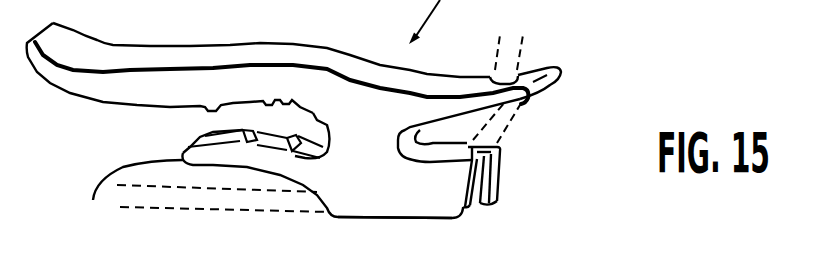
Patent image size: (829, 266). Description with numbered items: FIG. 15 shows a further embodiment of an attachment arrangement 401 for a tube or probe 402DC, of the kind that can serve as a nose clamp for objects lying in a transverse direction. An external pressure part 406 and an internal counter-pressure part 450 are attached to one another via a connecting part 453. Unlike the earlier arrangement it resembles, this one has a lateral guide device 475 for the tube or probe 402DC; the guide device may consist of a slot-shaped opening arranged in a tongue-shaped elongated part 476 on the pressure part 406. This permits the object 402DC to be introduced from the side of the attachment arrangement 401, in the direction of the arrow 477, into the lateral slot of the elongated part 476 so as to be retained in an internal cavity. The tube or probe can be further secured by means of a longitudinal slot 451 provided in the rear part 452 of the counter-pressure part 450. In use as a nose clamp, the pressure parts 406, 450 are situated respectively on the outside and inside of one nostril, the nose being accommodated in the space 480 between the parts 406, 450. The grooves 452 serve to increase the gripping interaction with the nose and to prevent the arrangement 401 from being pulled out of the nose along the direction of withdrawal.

The external pressure part 406 is at (113, 80).
The rear part / grooves 452 is at (250, 128).
The space 480 is at (180, 120).
The internal counter-pressure part 450 is at (126, 203).
The tube or probe 402DC is at (243, 197).
The connecting part 453 is at (375, 170).
The longitudinal slot 451 is at (500, 227).
The attachment arrangement 401 is at (620, 260).
The arrow 477 is at (597, 184).
The lateral guide device 475 is at (793, 252).
The tongue-shaped elongated part 476 is at (518, 103).